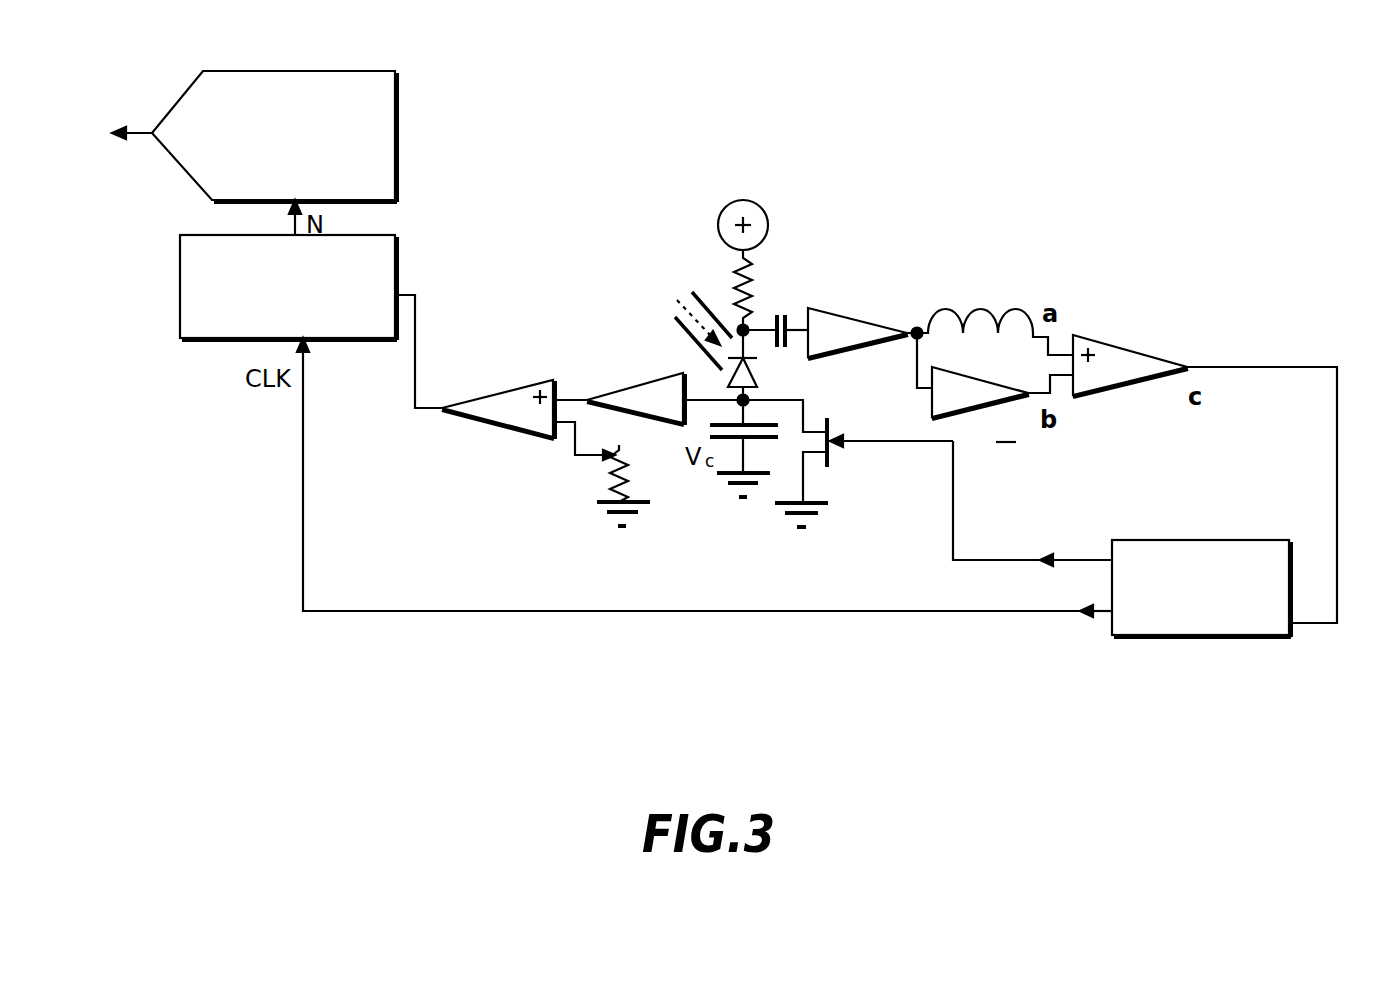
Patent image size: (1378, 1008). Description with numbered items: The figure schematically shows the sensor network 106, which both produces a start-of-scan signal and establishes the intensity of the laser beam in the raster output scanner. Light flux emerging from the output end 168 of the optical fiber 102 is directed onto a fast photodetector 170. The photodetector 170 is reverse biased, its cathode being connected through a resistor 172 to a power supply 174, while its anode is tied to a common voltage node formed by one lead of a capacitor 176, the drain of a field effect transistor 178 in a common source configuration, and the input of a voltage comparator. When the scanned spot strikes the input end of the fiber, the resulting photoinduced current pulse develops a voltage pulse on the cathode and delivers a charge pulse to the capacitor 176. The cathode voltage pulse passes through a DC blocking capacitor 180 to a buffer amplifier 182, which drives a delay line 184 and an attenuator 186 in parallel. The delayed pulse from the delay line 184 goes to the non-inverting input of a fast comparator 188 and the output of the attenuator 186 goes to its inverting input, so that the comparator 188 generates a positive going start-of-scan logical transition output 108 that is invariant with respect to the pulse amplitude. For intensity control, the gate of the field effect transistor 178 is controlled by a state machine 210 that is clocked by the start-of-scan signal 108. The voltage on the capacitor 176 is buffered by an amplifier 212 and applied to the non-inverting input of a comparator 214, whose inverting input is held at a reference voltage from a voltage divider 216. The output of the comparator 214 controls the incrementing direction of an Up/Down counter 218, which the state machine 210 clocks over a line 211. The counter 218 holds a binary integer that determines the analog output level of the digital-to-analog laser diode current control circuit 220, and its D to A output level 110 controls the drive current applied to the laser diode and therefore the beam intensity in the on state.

The optical fiber 102 is at (697, 291).
The sensor network 106 is at (1081, 113).
The start-of-scan logical transition output 108 is at (1258, 372).
The D to A output level 110 is at (134, 126).
The output end of optical fiber 168 is at (721, 370).
The fast photodetector 170 is at (758, 377).
The resistor 172 is at (752, 282).
The power supply 174 is at (762, 218).
The capacitor 176 is at (755, 438).
The field effect transistor 178 is at (829, 432).
The DC blocking capacitor 180 is at (790, 313).
The buffer amplifier 182 is at (850, 322).
The delay line 184 is at (992, 313).
The attenuator 186 is at (987, 390).
The fast comparator 188 is at (1125, 355).
The state machine 210 is at (1292, 638).
The line 211 is at (415, 608).
The amplifier 212 is at (657, 408).
The comparator 214 is at (504, 397).
The voltage divider 216 is at (612, 480).
The Up/Down counter 218 is at (184, 289).
The laser diode current control circuit 220 is at (388, 131).